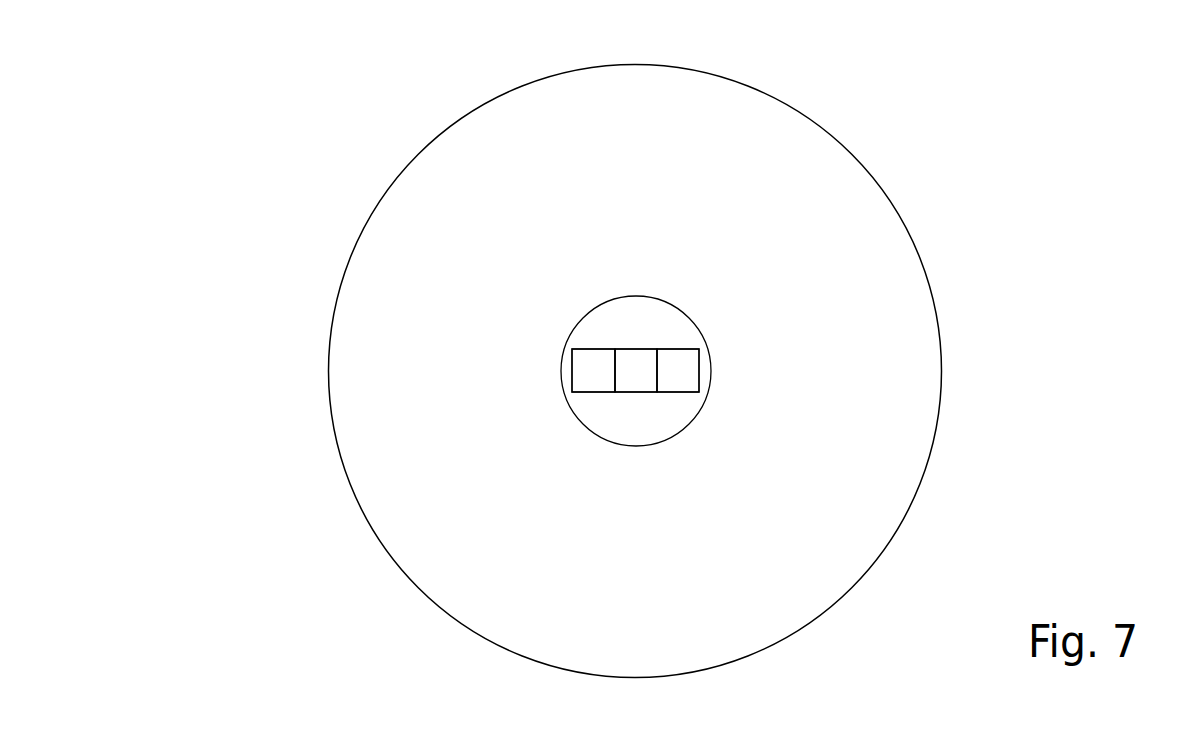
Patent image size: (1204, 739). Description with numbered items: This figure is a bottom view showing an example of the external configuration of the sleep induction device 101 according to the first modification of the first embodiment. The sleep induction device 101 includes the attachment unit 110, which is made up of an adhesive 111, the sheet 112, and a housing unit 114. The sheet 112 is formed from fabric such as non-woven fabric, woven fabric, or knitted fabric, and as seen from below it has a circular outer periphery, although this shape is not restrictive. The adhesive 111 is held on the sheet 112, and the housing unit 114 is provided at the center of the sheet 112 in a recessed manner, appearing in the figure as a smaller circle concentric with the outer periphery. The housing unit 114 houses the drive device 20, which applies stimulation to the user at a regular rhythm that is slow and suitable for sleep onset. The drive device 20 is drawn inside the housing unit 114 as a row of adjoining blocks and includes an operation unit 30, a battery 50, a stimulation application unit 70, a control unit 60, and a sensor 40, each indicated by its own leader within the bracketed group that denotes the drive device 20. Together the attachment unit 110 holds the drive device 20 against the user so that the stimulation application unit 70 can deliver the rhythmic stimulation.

The sleep induction device 101 is at (406, 166).
The attachment unit 110 is at (329, 367).
The adhesive 111 is at (405, 303).
The sheet 112 is at (368, 528).
The housing unit 114 is at (675, 433).
The drive device 20 is at (752, 243).
The operation unit 30 is at (593, 372).
The battery 50 is at (599, 347).
The stimulation application unit 70 is at (637, 372).
The control unit 60 is at (677, 347).
The sensor 40 is at (680, 372).